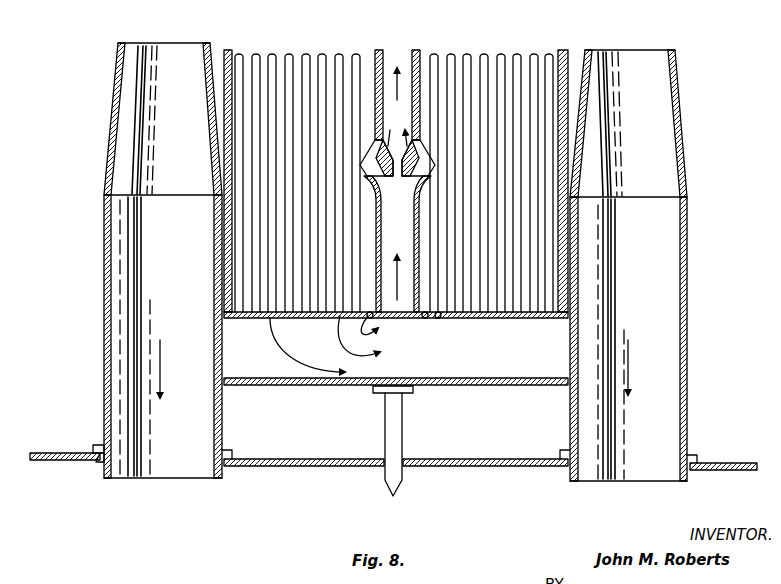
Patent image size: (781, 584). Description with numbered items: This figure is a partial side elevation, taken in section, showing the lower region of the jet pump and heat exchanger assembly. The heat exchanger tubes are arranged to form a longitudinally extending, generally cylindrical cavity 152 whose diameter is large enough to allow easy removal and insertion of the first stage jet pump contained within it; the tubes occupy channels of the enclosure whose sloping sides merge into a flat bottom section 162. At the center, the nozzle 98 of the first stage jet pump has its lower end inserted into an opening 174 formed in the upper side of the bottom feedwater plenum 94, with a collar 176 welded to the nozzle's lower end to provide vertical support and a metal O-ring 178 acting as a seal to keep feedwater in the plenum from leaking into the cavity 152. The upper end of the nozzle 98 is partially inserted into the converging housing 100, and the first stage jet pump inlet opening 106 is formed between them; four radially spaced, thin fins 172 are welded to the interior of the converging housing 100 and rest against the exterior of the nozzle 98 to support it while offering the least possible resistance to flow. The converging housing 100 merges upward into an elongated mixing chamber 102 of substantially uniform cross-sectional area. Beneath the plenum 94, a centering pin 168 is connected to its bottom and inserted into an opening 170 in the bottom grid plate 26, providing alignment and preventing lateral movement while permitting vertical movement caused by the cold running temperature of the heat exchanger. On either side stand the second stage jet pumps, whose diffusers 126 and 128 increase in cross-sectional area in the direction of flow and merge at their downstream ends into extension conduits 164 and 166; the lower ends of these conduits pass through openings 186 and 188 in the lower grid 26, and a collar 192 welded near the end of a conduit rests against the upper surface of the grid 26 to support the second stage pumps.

The bottom grid plate 26 is at (60, 461).
The bottom feedwater plenum 94 is at (540, 371).
The nozzle 98 is at (418, 318).
The converging housing 100 is at (422, 135).
The mixing chamber 102 is at (377, 50).
The first stage jet pump inlet opening 106 is at (404, 135).
The diffuser 126 is at (686, 120).
The diffuser 128 is at (118, 90).
The cylindrical cavity 152 is at (338, 316).
The flat bottom section 162 is at (228, 50).
The extension conduit 164 is at (688, 268).
The extension conduit 166 is at (108, 272).
The centering pin 168 is at (405, 478).
The opening 170 is at (380, 467).
The fins 172 is at (370, 158).
The opening 174 is at (430, 316).
The collar 176 is at (445, 318).
The metal O-ring 178 is at (372, 278).
The opening 186 is at (700, 470).
The opening 188 is at (98, 462).
The collar 192 is at (95, 450).